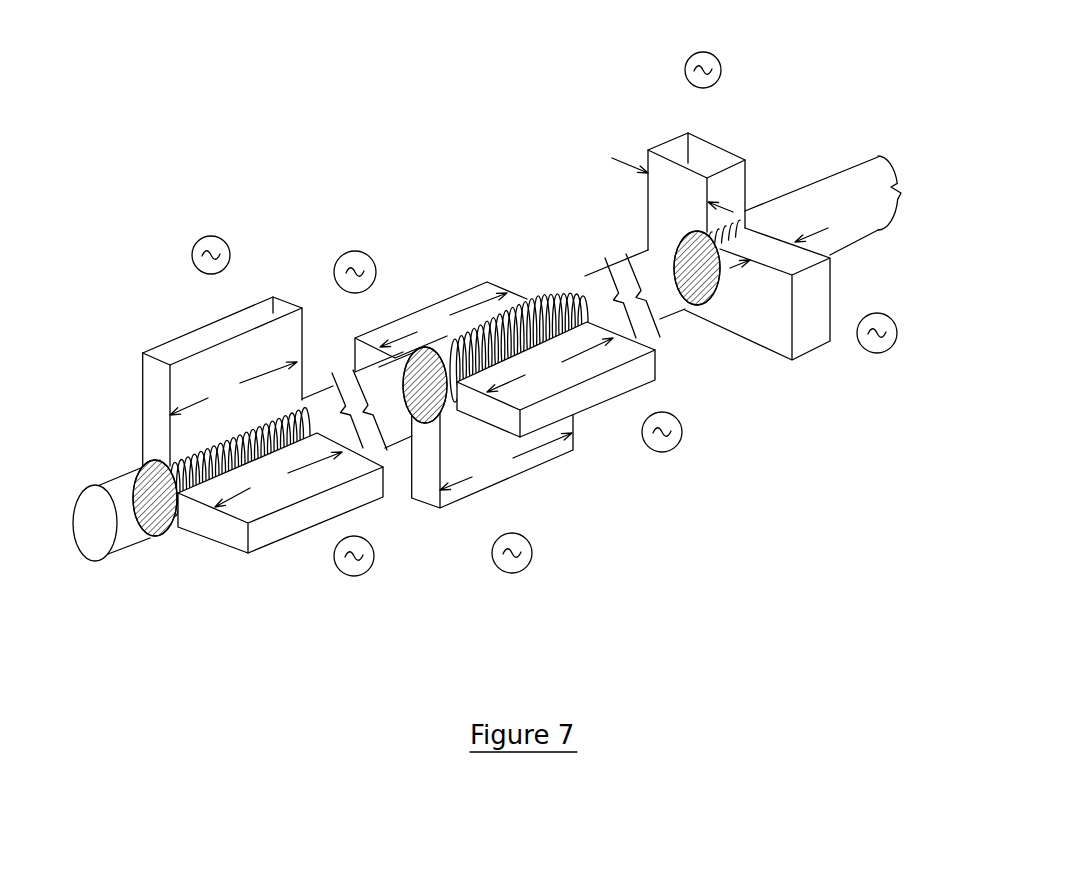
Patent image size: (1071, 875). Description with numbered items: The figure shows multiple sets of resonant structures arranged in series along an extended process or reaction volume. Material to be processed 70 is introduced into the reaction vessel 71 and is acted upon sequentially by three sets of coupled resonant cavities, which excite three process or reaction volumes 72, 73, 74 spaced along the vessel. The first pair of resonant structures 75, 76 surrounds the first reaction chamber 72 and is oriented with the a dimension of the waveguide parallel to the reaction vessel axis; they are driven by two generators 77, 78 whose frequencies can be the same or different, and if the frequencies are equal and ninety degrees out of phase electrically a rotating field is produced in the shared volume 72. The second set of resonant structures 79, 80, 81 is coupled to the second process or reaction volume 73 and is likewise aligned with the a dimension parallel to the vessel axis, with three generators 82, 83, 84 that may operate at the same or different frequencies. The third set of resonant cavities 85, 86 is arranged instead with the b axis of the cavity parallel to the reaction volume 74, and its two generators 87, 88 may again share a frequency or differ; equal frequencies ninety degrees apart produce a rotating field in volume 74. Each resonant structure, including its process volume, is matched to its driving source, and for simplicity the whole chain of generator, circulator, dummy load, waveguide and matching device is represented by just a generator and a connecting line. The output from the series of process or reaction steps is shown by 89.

The material to be processed 70 is at (82, 531).
The reaction vessel 71 is at (96, 484).
The first process or reaction volume 72 is at (155, 537).
The second process or reaction volume 73 is at (425, 400).
The third process or reaction volume 74 is at (688, 272).
The first resonant structure 75 is at (165, 342).
The first resonant structure 76 is at (222, 548).
The generator 77 is at (211, 333).
The generator 78 is at (273, 523).
The second-set resonant structure 79 is at (462, 291).
The second-set resonant structure 80 is at (557, 458).
The second-set resonant structure 81 is at (653, 367).
The generator 82 is at (422, 303).
The generator 83 is at (512, 485).
The generator 84 is at (587, 400).
The third-set resonant cavity 85 is at (735, 173).
The third-set resonant cavity 86 is at (833, 302).
The generator 87 is at (703, 150).
The generator 88 is at (800, 302).
The output 89 is at (903, 183).